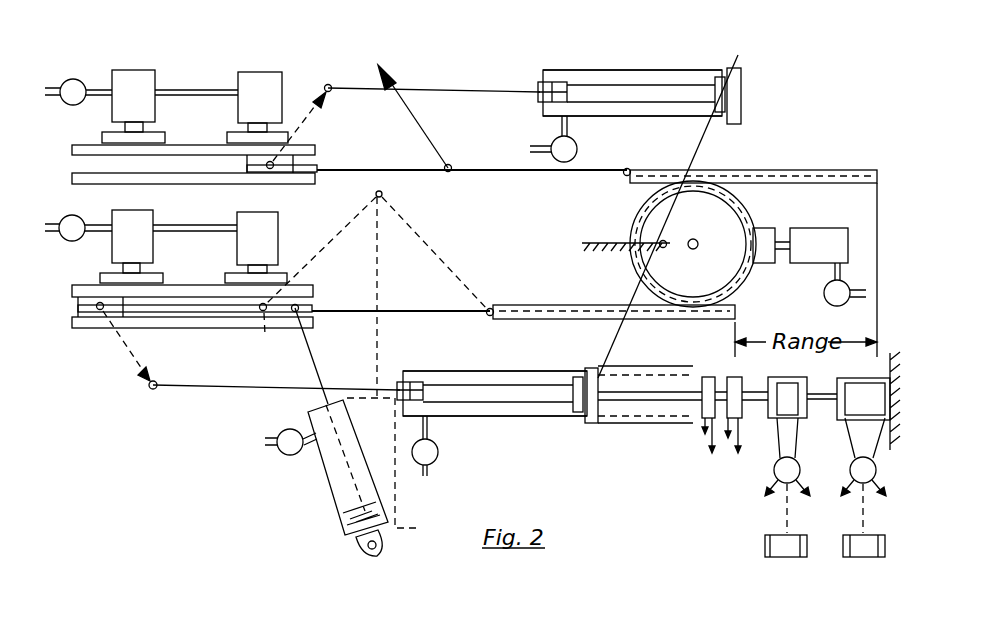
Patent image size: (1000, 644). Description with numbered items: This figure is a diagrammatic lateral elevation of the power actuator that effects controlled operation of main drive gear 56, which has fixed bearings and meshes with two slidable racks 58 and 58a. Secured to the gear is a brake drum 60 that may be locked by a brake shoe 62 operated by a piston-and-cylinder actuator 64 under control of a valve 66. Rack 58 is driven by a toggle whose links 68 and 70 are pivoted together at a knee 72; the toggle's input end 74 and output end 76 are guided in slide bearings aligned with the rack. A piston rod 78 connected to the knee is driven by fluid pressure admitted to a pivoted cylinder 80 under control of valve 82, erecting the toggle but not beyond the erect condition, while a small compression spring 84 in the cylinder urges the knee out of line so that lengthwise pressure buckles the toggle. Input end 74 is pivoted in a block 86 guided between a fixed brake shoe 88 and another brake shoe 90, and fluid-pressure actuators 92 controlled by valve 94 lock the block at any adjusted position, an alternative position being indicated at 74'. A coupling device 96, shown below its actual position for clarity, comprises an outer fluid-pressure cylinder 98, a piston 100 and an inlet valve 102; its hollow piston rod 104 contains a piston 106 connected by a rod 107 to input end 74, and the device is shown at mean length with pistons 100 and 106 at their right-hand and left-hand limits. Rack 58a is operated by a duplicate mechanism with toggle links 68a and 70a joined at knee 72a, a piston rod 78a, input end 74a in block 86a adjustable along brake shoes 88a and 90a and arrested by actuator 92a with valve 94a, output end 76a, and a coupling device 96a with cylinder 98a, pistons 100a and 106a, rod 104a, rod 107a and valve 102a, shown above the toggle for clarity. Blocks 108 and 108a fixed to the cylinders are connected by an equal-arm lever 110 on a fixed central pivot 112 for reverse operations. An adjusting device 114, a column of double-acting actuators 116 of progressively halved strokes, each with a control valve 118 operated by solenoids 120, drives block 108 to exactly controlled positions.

The main drive gear 56 is at (643, 201).
The rack 58 is at (643, 320).
The rack 58a is at (838, 170).
The brake drum 60 is at (739, 203).
The brake shoe 62 is at (758, 263).
The piston-and-cylinder actuator 64 is at (852, 212).
The control valve 66 is at (829, 303).
The toggle link 68 is at (426, 311).
The toggle link 68a is at (478, 172).
The toggle link 70 is at (185, 315).
The toggle link 70a is at (400, 150).
The knee 72 is at (383, 194).
The knee 72a is at (450, 164).
The input end 74 is at (122, 346).
The input end 74' is at (250, 334).
The input end 74a is at (272, 169).
The output end 76 is at (492, 308).
The output end 76a is at (628, 168).
The piston rod 78 is at (308, 352).
The piston rod 78a is at (416, 114).
The cylinder 80 is at (337, 488).
The valve 82 is at (277, 441).
The compression spring 84 is at (398, 465).
The block 86 is at (78, 308).
The block 86a is at (248, 170).
The fixed brake shoe 88 is at (78, 326).
The brake shoe 88a is at (78, 180).
The brake shoe 90 is at (78, 290).
The brake shoe 90a is at (78, 150).
The fluid-pressure actuator 92 is at (245, 243).
The fluid-pressure actuator 92a is at (148, 85).
The control valve 94 is at (68, 216).
The control valve 94a is at (100, 63).
The coupling device 96 is at (509, 431).
The coupling device 96a is at (626, 66).
The fluid-pressure cylinder 98 is at (545, 371).
The fluid-pressure cylinder 98a is at (660, 70).
The piston 100 is at (576, 412).
The piston 100a is at (736, 67).
The fluid-pressure inlet valve 102 is at (438, 458).
The fluid-pressure inlet valve 102a is at (583, 136).
The piston rod 104 is at (488, 371).
The piston rod 104a is at (593, 86).
The piston 106 is at (431, 371).
The piston 106a is at (546, 85).
The rod 107 is at (217, 392).
The rod 107a is at (466, 72).
The block 108 is at (595, 425).
The block 108a is at (743, 113).
The equal-arm lever 110 is at (679, 222).
The fixed pivot 112 is at (664, 249).
The adjusting device 114 is at (718, 368).
The double-acting fluid-pressure actuator 116 is at (730, 416).
The control valve 118 is at (776, 476).
The solenoid 120 is at (770, 558).